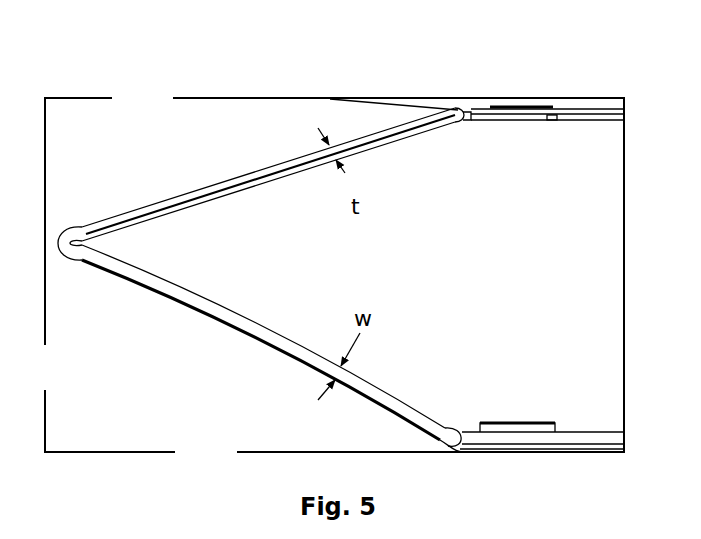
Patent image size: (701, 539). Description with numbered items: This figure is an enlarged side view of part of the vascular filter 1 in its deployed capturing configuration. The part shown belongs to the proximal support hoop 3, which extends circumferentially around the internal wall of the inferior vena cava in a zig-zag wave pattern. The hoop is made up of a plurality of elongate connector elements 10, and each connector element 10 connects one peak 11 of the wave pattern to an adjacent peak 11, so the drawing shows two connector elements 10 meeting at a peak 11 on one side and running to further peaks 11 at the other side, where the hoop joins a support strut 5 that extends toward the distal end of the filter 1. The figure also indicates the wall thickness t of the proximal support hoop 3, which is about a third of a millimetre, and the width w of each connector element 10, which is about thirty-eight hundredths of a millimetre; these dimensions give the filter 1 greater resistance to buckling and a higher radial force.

The filter 1 is at (567, 77).
The proximal support hoop 3 is at (140, 277).
The support struts 5 is at (515, 112).
The elongate connector elements 10 is at (270, 273).
The peak 11 is at (443, 122).